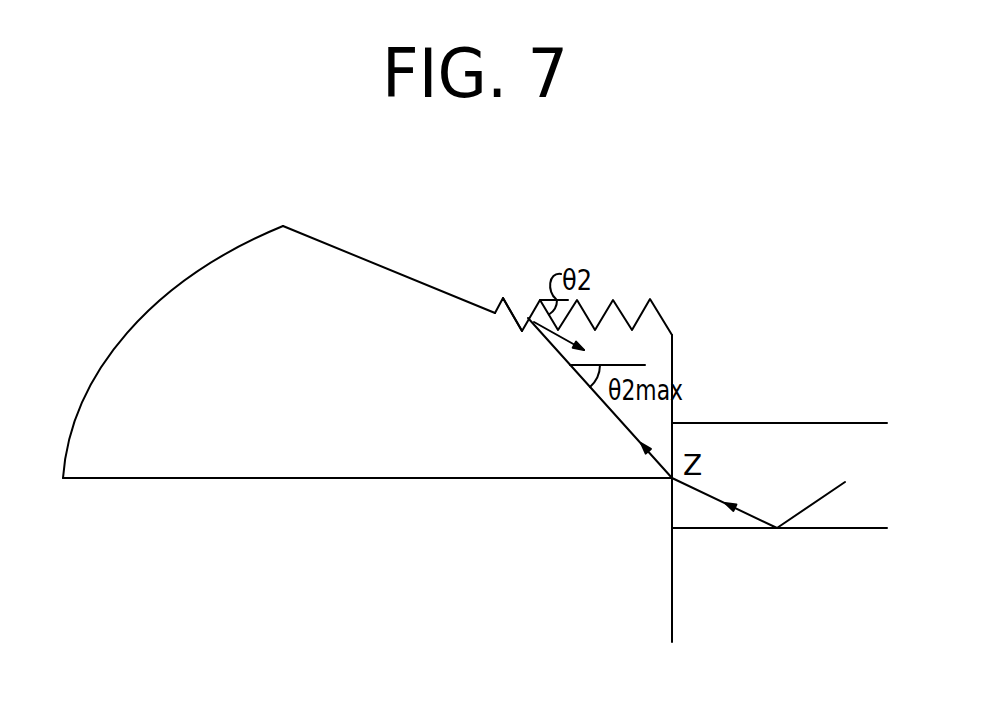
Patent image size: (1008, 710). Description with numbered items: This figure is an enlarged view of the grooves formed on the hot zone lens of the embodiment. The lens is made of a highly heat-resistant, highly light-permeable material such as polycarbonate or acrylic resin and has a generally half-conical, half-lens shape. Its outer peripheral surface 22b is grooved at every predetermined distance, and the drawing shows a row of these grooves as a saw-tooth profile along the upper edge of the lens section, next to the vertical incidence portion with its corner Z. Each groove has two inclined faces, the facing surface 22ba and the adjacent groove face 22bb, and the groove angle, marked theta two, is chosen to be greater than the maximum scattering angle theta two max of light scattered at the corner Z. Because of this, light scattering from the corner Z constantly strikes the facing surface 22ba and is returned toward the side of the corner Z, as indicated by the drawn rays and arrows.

The outer peripheral surface 22b is at (539, 397).
The facing surface 22ba is at (609, 306).
The prism inclined surface 22bb is at (514, 318).